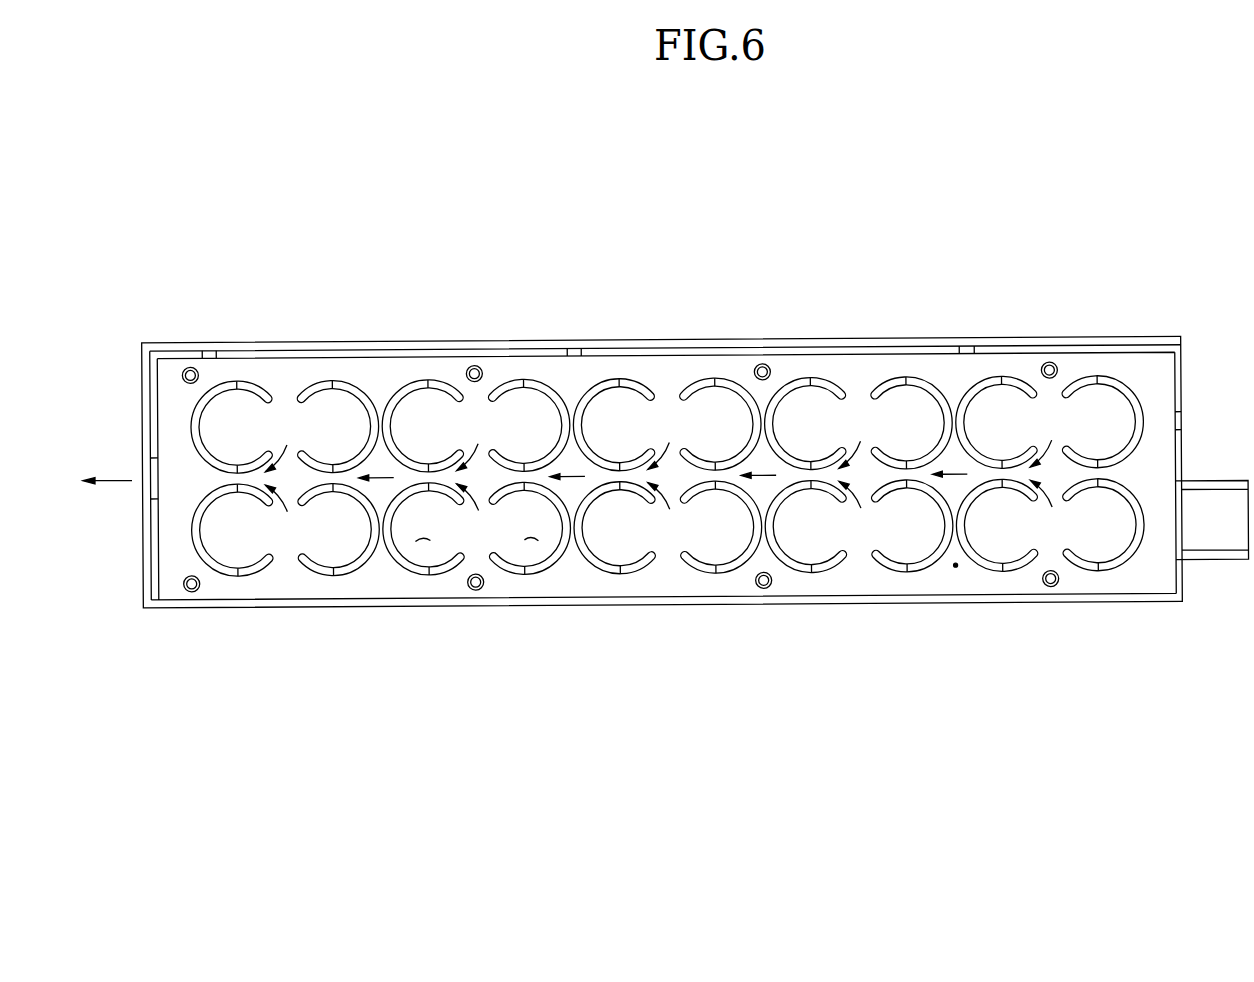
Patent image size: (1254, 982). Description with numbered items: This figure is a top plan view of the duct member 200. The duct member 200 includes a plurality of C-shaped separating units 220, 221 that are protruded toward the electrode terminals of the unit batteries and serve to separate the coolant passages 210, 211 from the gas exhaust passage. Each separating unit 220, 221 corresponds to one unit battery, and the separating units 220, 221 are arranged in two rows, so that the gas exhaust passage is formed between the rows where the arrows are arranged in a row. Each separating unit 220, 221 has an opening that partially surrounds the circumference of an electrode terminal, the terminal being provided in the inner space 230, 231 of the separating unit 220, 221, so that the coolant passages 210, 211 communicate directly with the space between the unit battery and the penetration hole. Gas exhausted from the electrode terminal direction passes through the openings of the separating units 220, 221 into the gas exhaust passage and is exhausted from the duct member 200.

The duct member 200 is at (656, 250).
The coolant passage 210 is at (512, 573).
The coolant passage 211 is at (438, 575).
The separating unit 220 is at (550, 570).
The separating unit 221 is at (401, 571).
The inner space 230 is at (534, 541).
The inner space 231 is at (421, 539).